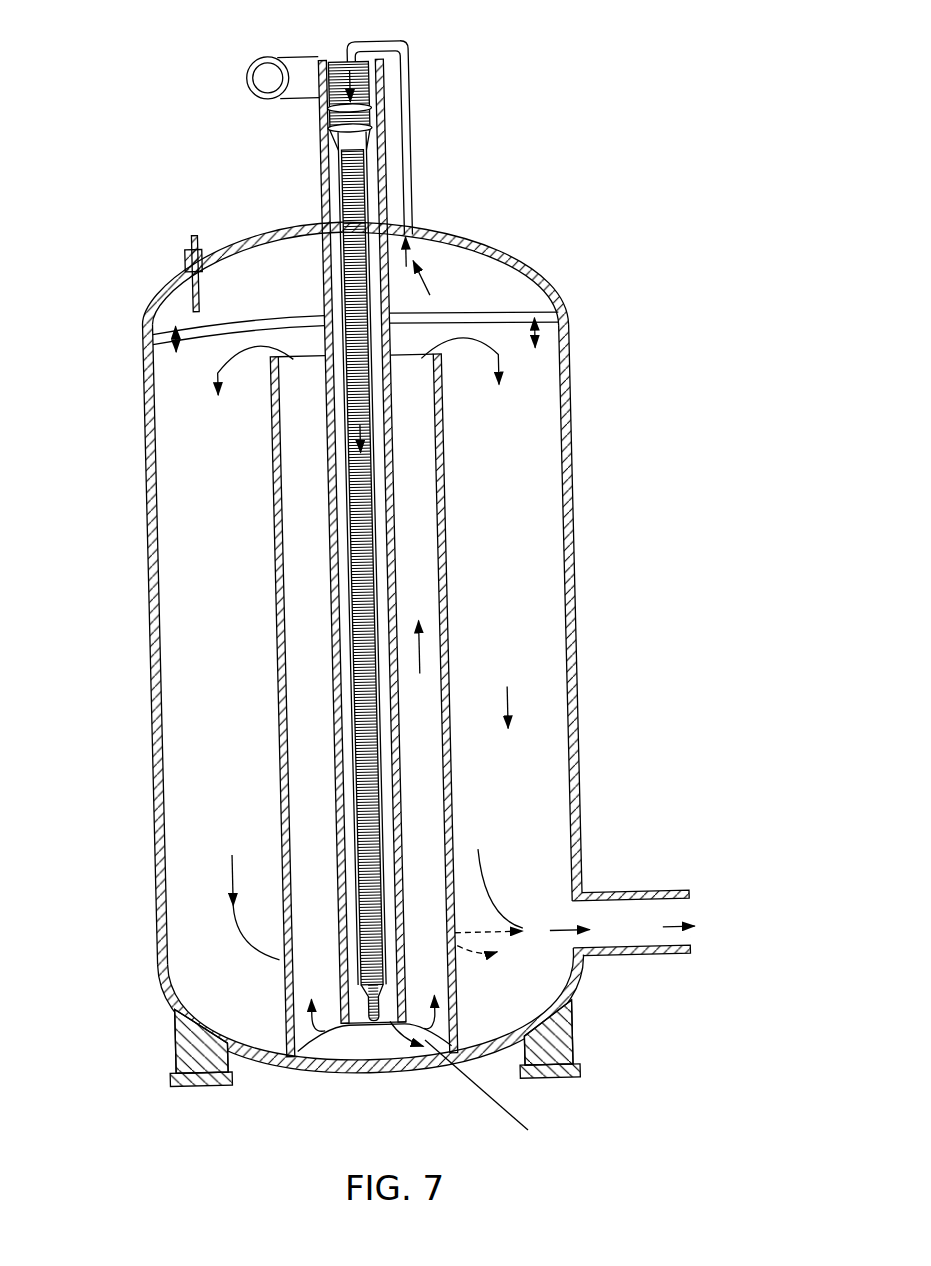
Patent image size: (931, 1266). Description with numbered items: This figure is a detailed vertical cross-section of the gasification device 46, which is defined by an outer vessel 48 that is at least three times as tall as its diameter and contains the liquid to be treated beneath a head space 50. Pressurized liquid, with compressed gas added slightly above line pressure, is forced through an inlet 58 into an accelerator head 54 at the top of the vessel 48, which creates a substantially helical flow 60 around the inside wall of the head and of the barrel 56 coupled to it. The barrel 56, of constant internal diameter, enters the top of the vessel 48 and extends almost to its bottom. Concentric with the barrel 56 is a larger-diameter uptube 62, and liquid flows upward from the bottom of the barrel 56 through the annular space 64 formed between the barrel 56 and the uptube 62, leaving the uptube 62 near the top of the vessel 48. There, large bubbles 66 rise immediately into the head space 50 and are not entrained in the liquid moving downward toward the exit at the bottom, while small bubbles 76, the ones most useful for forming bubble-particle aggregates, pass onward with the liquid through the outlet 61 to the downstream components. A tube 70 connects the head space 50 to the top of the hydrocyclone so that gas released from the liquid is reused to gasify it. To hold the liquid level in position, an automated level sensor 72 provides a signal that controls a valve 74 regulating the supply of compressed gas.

The gasification device 46 is at (427, 645).
The outer vessel 48 is at (148, 672).
The head space 50 is at (287, 243).
The accelerator head 54 is at (298, 90).
The barrel 56 is at (325, 450).
The inlet 58 is at (253, 74).
The helical flow 60 is at (378, 128).
The outlet pipe 61 is at (647, 960).
The uptube 62 is at (272, 570).
The annular space 64 is at (425, 647).
The large bubbles 66 is at (545, 338).
The tube 70 is at (342, 63).
The automated level sensor 72 is at (182, 237).
The valve 74 is at (182, 237).
The small bubbles 76 is at (510, 378).